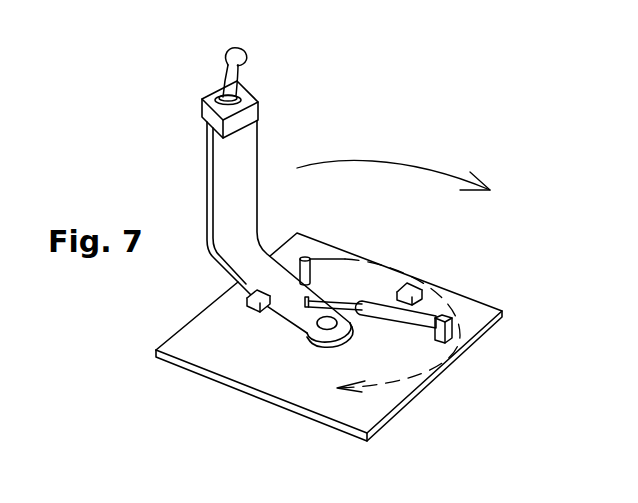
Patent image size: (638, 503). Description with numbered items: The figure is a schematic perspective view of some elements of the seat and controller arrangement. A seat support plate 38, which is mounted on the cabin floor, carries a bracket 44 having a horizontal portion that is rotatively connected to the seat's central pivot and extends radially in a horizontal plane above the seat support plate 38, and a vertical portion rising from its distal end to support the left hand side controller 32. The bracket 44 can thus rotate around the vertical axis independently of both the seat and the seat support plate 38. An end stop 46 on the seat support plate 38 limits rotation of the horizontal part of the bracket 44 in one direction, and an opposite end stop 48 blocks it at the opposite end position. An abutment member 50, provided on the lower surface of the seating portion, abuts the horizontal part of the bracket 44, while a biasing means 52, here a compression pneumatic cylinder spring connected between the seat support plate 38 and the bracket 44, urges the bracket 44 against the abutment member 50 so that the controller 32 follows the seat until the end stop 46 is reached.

The left hand side controller 32 is at (243, 55).
The seat support plate 38 is at (474, 313).
The bracket 44 is at (205, 183).
The end stop 46 is at (408, 284).
The opposite end stop 48 is at (249, 304).
The abutment member 50 is at (300, 258).
The biasing means 52 is at (410, 321).